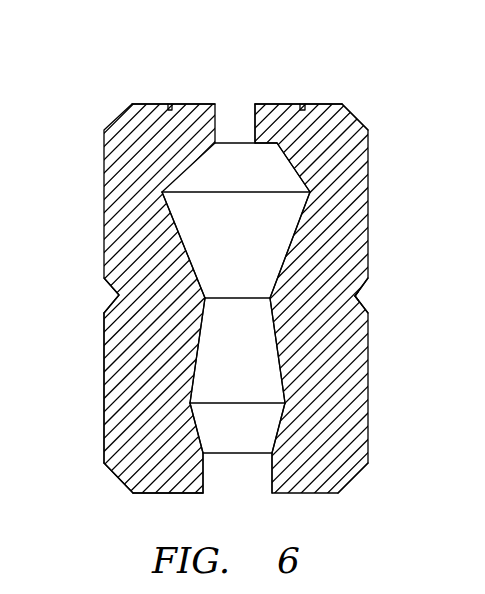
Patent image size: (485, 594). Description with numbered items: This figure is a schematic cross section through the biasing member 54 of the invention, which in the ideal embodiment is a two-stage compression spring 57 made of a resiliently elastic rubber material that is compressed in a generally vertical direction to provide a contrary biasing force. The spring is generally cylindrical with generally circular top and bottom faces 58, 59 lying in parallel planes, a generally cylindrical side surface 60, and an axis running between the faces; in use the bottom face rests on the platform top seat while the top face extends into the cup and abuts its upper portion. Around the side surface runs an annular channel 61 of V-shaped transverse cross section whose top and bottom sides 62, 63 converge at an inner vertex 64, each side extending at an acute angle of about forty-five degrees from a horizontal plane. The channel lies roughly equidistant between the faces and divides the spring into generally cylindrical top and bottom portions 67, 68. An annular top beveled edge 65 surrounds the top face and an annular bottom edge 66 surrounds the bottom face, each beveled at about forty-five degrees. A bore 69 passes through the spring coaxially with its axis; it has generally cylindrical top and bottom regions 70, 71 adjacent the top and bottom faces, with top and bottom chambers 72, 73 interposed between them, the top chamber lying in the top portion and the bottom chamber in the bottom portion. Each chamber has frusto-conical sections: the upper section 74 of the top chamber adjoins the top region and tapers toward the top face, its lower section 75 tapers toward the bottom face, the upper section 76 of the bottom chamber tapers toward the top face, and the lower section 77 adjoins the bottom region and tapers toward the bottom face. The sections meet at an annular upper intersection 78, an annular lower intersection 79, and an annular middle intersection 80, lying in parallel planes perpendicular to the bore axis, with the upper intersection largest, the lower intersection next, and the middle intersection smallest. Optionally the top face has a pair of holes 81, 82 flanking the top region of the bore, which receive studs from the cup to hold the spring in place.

The biasing member 54 is at (109, 80).
The two-stage compression spring 57 is at (354, 93).
The top face 58 is at (155, 103).
The bottom face 59 is at (193, 493).
The cylindrical side surface 60 is at (368, 375).
The annular channel 61 is at (104, 297).
The top side of annular channel 62 is at (358, 293).
The bottom side of annular channel 63 is at (367, 310).
The inner vertex 64 is at (353, 300).
The annular top beveled edge 65 is at (360, 110).
The annular bottom edge 66 is at (358, 477).
The top portion 67 is at (122, 161).
The bottom portion 68 is at (127, 427).
The bore 69 is at (223, 112).
The top region of bore 70 is at (255, 120).
The bottom region of bore 71 is at (272, 473).
The top chamber 72 is at (278, 226).
The bottom chamber 73 is at (277, 428).
The upper section of top chamber 74 is at (300, 189).
The lower section of top chamber 75 is at (270, 285).
The upper section of bottom chamber 76 is at (208, 347).
The lower section of bottom chamber 77 is at (132, 478).
The annular upper intersection 78 is at (165, 195).
The annular lower intersection 79 is at (204, 286).
The annular middle intersection 80 is at (188, 392).
The hole 81 is at (170, 103).
The hole 82 is at (305, 103).